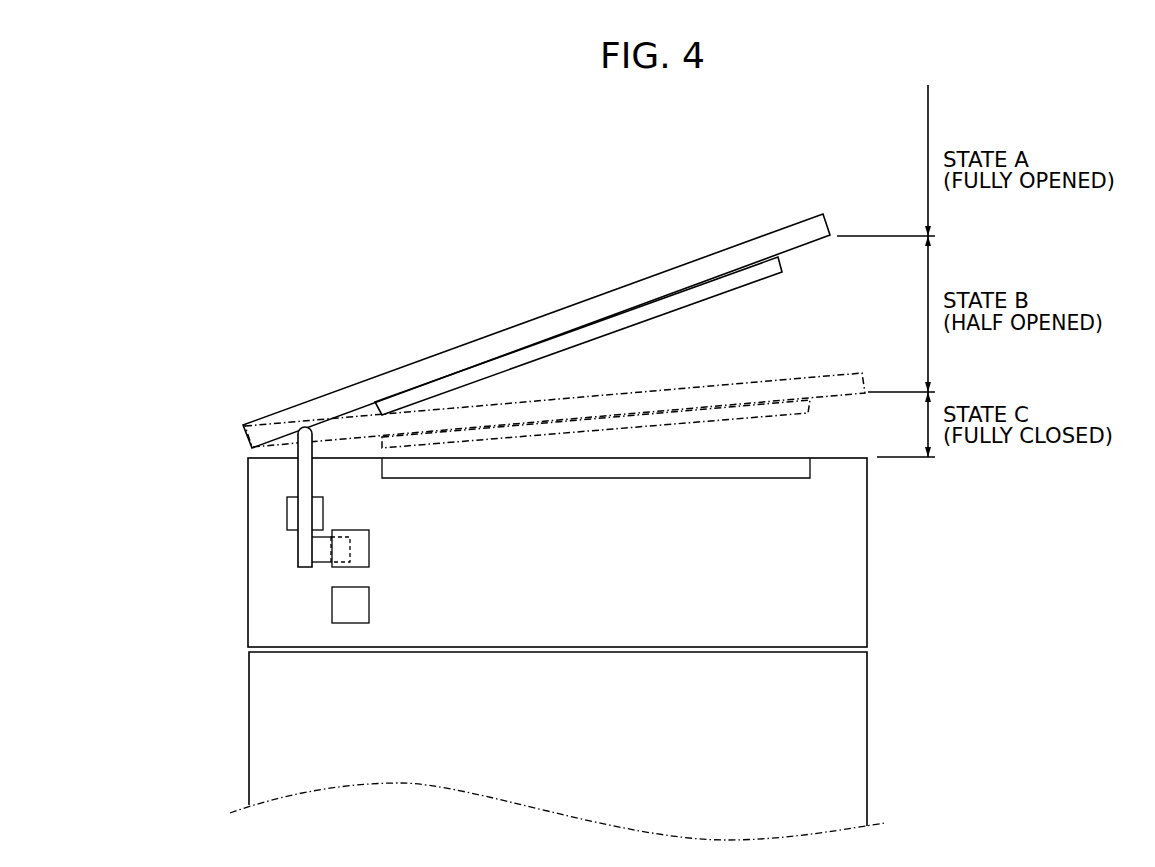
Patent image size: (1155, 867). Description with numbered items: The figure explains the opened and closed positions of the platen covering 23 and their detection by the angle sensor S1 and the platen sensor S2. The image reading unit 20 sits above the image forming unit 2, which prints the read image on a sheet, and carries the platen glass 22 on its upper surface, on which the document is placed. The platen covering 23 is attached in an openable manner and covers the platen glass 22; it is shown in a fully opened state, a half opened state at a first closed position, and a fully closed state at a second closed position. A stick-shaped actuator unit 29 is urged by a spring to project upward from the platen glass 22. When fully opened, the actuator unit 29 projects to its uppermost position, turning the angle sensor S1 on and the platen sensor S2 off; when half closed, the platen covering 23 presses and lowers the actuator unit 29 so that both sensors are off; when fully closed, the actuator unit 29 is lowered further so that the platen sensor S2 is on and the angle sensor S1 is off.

The image forming unit 2 is at (845, 733).
The image reading unit 20 is at (840, 577).
The platen glass 22 is at (667, 467).
The platen covering 23 is at (477, 350).
The actuator unit 29 is at (307, 485).
The angle sensor S1 is at (360, 553).
The platen sensor S2 is at (355, 610).